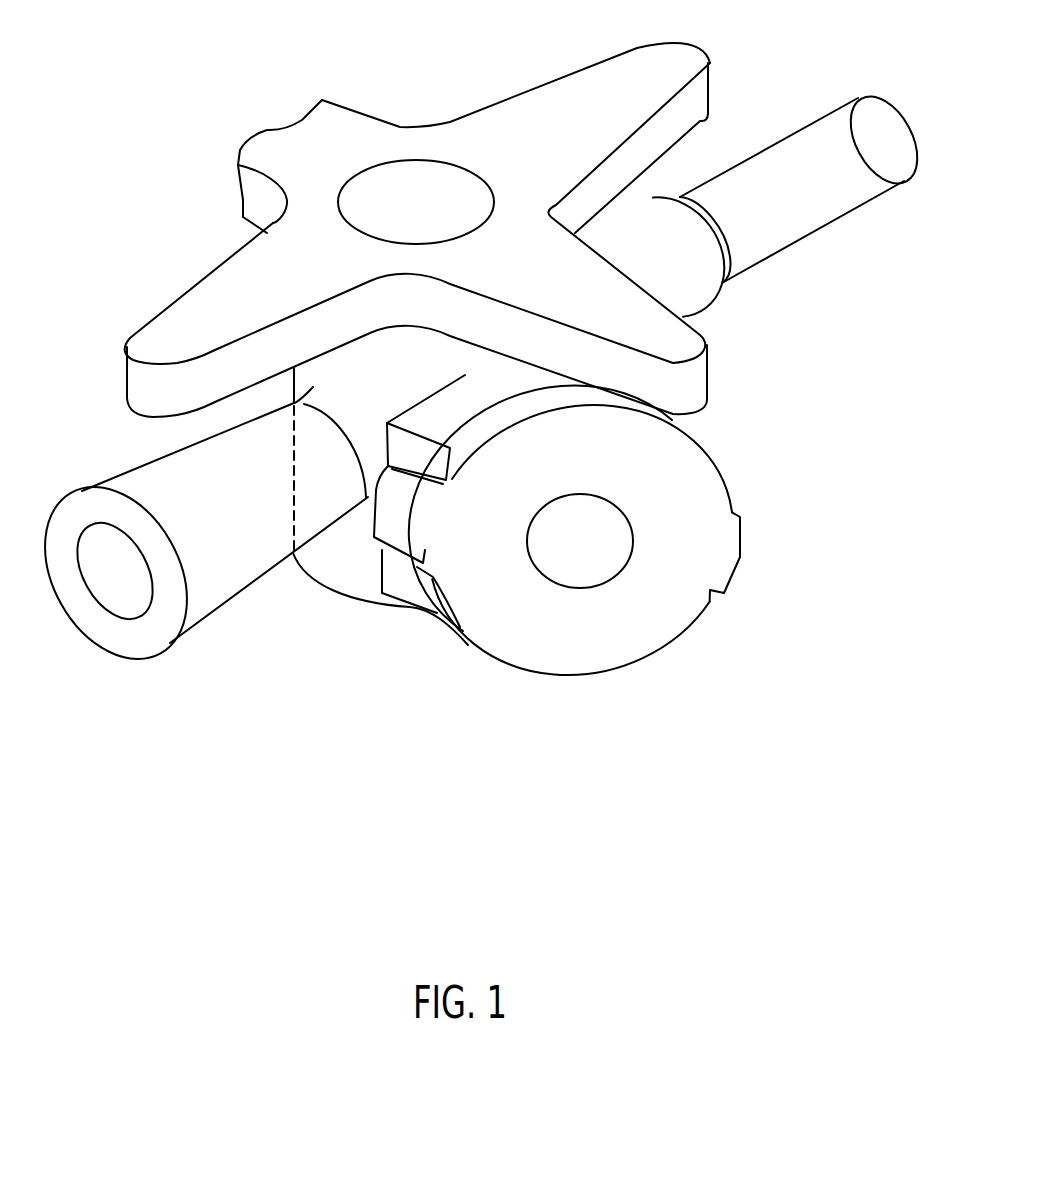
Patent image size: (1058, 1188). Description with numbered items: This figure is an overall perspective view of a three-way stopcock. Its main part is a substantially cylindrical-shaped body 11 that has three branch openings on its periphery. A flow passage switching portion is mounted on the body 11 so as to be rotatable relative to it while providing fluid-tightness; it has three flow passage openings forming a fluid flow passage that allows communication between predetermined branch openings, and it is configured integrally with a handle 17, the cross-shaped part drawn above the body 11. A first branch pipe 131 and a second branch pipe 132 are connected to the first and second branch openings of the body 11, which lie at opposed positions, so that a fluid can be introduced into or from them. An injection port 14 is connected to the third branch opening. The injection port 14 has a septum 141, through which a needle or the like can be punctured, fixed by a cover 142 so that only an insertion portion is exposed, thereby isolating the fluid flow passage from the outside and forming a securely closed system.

The body 11 is at (360, 620).
The injection port 14 is at (574, 626).
The handle 17 is at (223, 287).
The first branch pipe 131 is at (142, 483).
The second branch pipe 132 is at (802, 208).
The septum 141 is at (577, 567).
The cover 142 is at (617, 647).